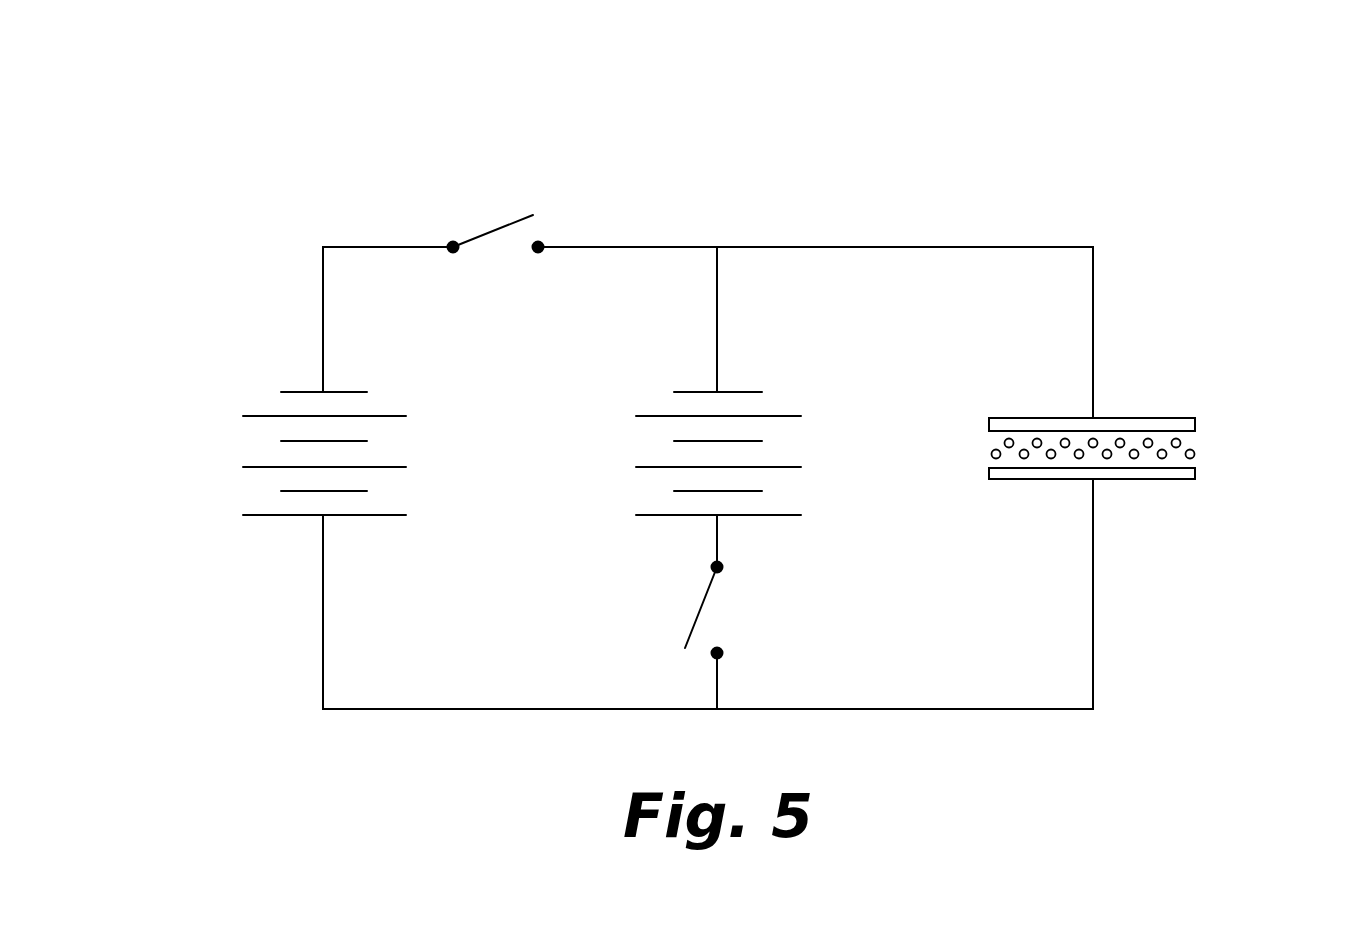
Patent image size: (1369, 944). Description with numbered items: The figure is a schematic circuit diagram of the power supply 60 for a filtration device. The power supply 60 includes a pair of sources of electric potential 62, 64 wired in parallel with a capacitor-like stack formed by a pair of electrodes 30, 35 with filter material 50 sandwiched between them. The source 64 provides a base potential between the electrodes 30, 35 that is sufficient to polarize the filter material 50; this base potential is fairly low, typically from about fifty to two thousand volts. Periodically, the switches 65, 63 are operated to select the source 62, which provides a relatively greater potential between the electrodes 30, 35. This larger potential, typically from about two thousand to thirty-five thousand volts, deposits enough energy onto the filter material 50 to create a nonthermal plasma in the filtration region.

The electrode 30 is at (1152, 418).
The electrode 35 is at (1127, 479).
The filter material 50 is at (1197, 453).
The power supply 60 is at (1222, 102).
The source of electric potential 62 is at (372, 515).
The switch 63 is at (490, 228).
The source of electric potential 64 is at (778, 515).
The switch 65 is at (693, 617).